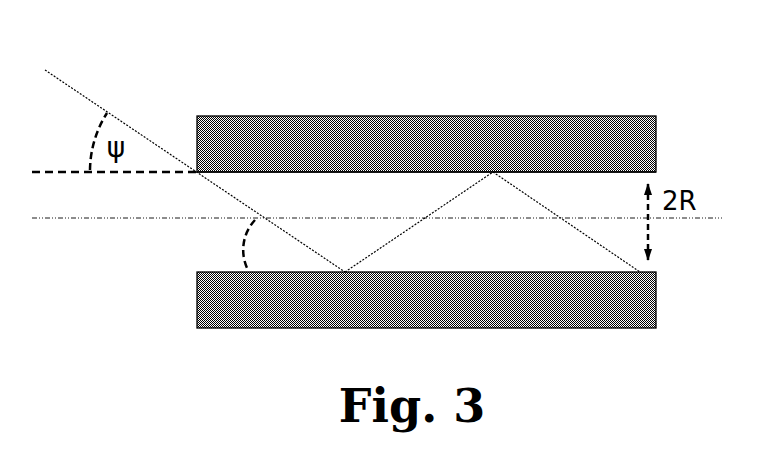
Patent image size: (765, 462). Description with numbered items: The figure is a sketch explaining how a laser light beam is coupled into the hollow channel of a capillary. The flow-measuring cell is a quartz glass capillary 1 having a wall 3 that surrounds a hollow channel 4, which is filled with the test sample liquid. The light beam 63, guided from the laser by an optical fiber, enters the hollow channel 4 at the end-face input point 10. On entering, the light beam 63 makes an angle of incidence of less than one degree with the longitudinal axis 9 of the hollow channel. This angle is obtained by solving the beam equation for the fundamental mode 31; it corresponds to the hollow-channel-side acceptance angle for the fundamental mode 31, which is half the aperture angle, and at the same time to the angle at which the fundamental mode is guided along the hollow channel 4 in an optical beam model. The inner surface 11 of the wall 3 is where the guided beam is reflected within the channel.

The quartz glass capillary 1 is at (285, 101).
The wall 3 is at (456, 137).
The hollow channel 4 is at (426, 222).
The longitudinal axis 9 is at (58, 219).
The input point 10 is at (394, 286).
The reflective inner surface 11 is at (426, 120).
The fundamental mode 31 is at (287, 235).
The light beam 63 is at (88, 98).